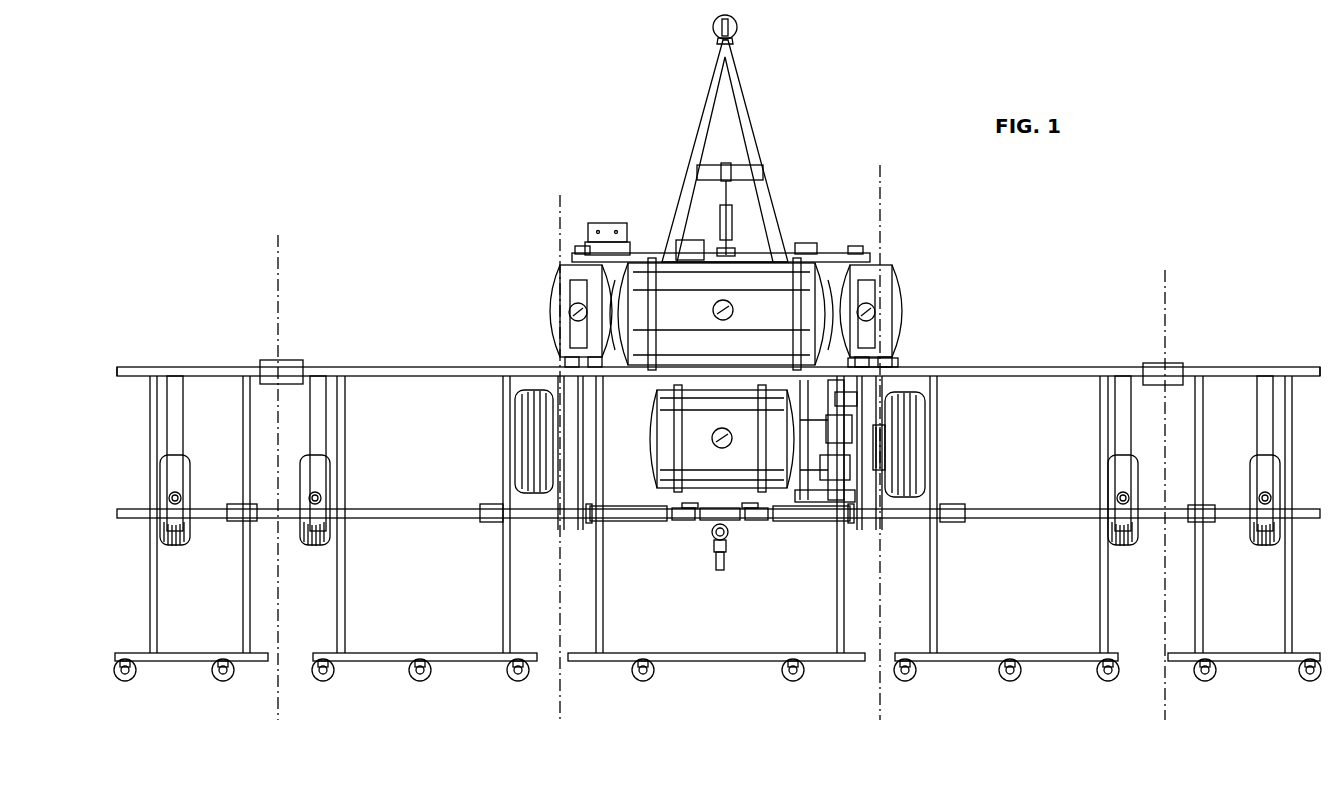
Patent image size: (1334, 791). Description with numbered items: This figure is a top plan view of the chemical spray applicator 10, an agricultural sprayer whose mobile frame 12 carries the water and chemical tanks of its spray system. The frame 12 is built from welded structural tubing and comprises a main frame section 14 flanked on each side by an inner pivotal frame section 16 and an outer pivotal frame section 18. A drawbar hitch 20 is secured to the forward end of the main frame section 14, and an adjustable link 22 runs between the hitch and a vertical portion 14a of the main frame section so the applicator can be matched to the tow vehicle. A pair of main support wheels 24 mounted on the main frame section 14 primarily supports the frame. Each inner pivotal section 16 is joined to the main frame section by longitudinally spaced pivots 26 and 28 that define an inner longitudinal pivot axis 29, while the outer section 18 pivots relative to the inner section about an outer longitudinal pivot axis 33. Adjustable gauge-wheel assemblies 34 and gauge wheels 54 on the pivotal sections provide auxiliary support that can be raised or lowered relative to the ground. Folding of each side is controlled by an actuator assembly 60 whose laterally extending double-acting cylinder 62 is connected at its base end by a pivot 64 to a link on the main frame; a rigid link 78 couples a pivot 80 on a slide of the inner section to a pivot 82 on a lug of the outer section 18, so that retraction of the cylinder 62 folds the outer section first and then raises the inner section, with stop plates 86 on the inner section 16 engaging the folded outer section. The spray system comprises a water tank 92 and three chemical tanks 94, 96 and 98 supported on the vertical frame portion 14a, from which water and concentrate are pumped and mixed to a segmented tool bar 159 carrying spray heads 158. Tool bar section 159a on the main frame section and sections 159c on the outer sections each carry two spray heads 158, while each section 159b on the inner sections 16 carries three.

The chemical spray applicator 10 is at (1035, 247).
The frame 12 is at (795, 190).
The main frame section 14 is at (835, 256).
The vertical portion of the main frame section 14a is at (852, 245).
The inner pivotal frame section 16 is at (432, 367).
The outer pivotal frame section 18 is at (203, 367).
The drawbar hitch 20 is at (703, 123).
The adjustable link 22 is at (722, 220).
The main support wheels 24 is at (528, 452).
The pivot 26 is at (880, 523).
The pivot 28 is at (892, 366).
The inner longitudinal pivot axis 29 is at (560, 248).
The outer longitudinal pivot axis 33 is at (278, 290).
The adjustable gauge-wheel assembly 34 is at (160, 490).
The adjustable gauge wheel 54 is at (300, 486).
The actuator assembly 60 is at (650, 553).
The double-acting cylinder 62 is at (627, 521).
The pivot 64 is at (686, 522).
The rigid link 78 is at (400, 509).
The pivot 80 is at (493, 521).
The pivot 82 is at (238, 506).
The stop plates 86 is at (283, 362).
The water tank 92 is at (753, 285).
The chemical tank 94 is at (902, 290).
The chemical tank 96 is at (546, 313).
The chemical tank 98 is at (658, 418).
The spray heads 158 is at (232, 680).
The tool bar 159 is at (717, 664).
The tool bar section 159a is at (725, 661).
The tool bar section 159b is at (385, 661).
The tool bar section 159c is at (190, 661).